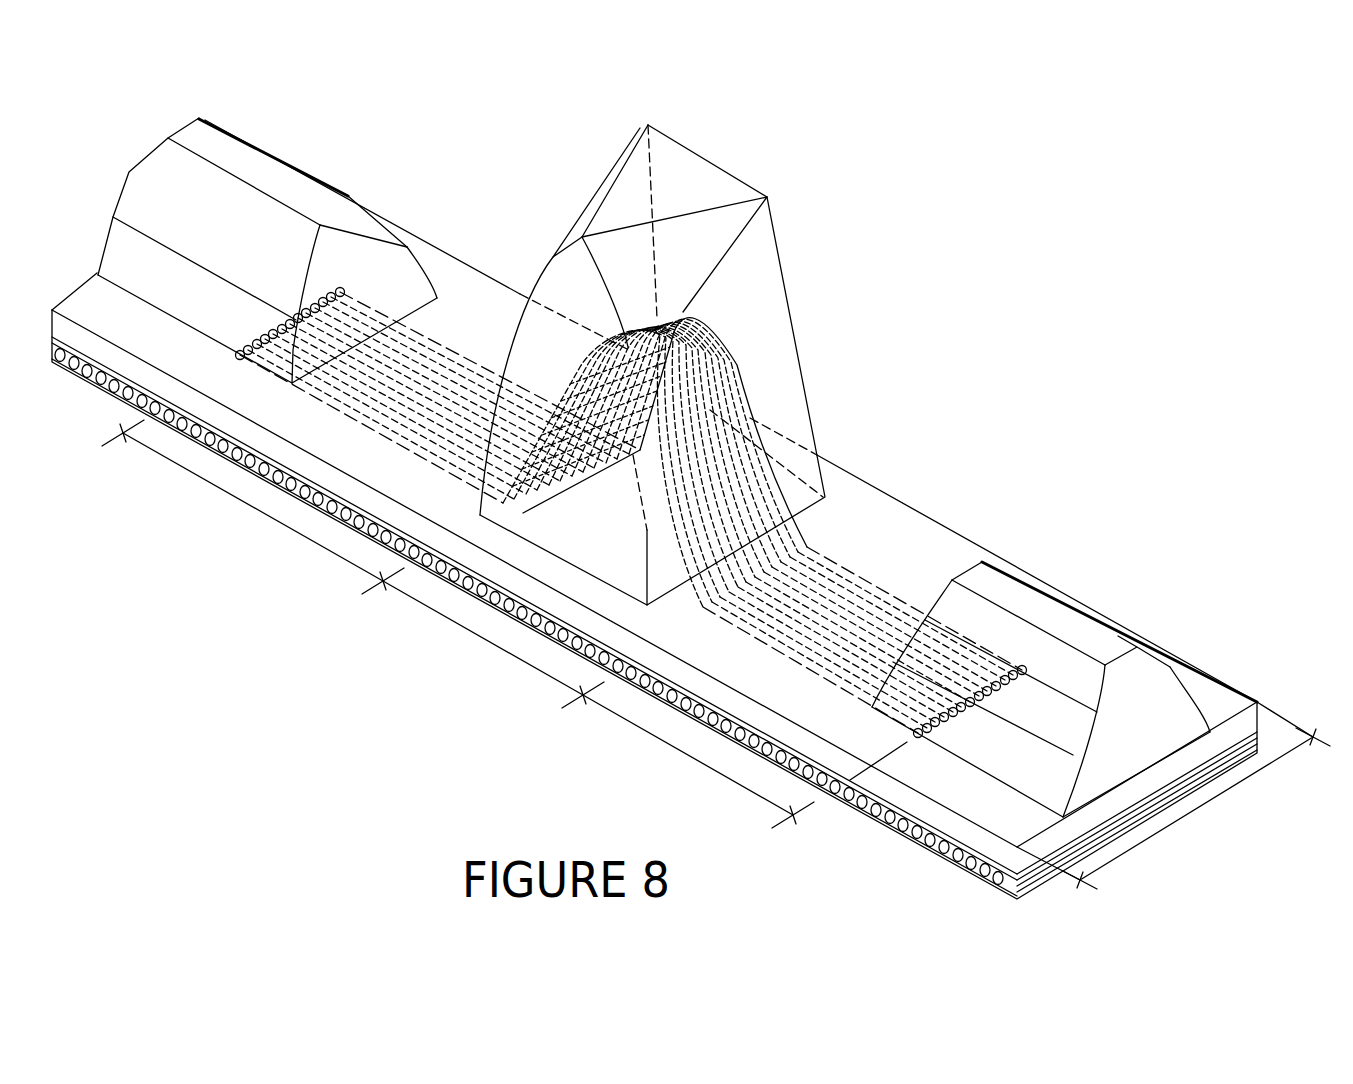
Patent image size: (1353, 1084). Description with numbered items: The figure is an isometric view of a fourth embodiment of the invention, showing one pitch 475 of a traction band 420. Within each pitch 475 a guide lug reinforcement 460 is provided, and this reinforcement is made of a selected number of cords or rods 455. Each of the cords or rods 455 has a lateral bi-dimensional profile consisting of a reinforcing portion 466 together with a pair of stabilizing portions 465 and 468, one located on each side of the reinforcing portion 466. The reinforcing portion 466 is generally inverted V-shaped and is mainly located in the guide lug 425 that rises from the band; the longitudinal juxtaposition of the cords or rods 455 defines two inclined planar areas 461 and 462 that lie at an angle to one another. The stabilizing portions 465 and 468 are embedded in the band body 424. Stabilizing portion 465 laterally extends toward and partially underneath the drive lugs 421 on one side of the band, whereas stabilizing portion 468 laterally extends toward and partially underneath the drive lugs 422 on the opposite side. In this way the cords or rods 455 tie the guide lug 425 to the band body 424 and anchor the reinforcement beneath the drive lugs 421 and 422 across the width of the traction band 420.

The traction band 420 is at (897, 495).
The drive lugs 421 is at (935, 580).
The drive lugs 422 is at (264, 139).
The band body 424 is at (906, 805).
The guide lug 425 is at (808, 380).
The cords or rods 455 is at (1000, 702).
The guide lug reinforcement 460 is at (738, 325).
The inclined planar area 461 is at (748, 362).
The inclined planar area 462 is at (482, 513).
The stabilizing portion 465 is at (644, 733).
The reinforcing portion 466 is at (465, 631).
The stabilizing portion 468 is at (190, 480).
The pitch 475 is at (1193, 822).